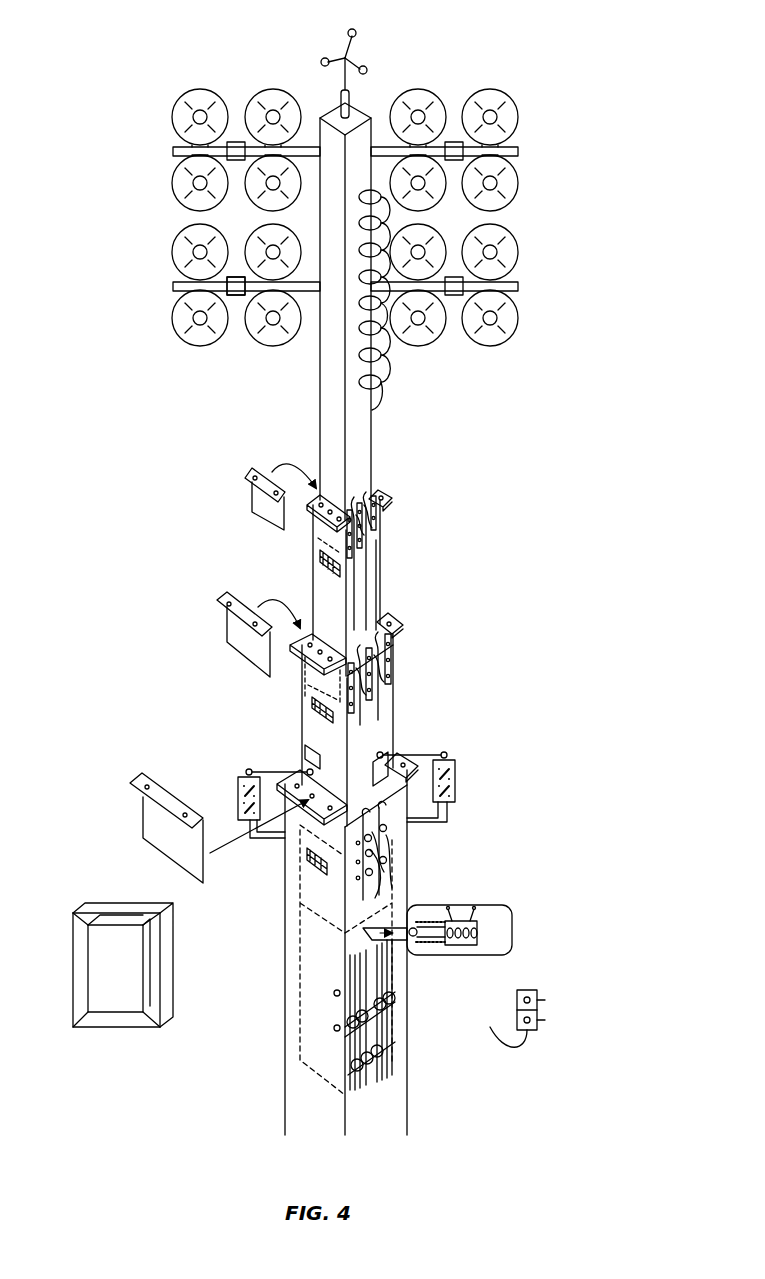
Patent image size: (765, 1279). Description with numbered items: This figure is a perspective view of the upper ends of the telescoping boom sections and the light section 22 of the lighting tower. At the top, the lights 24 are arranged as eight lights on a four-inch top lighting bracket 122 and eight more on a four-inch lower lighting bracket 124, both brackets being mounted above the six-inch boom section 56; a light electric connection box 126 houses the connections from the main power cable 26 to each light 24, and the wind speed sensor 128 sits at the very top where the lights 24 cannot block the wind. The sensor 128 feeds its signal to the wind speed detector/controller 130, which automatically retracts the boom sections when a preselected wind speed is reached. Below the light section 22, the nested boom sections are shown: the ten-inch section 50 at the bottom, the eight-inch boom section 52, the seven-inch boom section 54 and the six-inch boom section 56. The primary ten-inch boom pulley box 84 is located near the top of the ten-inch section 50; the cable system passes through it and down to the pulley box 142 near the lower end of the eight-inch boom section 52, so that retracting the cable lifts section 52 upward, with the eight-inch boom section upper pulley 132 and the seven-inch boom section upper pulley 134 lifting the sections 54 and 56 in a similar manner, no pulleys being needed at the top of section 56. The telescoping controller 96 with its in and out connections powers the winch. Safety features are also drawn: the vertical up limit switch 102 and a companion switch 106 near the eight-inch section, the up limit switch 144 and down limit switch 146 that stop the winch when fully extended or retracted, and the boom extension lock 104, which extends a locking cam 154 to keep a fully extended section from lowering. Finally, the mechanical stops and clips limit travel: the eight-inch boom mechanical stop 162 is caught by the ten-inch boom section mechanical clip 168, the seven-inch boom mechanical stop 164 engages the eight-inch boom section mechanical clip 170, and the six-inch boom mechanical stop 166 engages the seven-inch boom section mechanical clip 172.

The light section 22 is at (137, 124).
The lights 24 is at (499, 91).
The main power cable 26 is at (387, 368).
The lower pole section 50 is at (408, 890).
The 8" boom section 52 is at (394, 708).
The 7" boom section 54 is at (381, 577).
The 6" boom section 56 is at (372, 430).
The primary 10" boom pulley box 84 is at (388, 852).
The telescoping controller 96 is at (527, 990).
The vertical up limit switch 102 is at (238, 798).
The boom extension lock 104 is at (513, 928).
The right electrical box 106 is at (456, 781).
The 4" top lighting bracket 122 is at (523, 152).
The 4" lower lighting bracket 124 is at (518, 287).
The light electric connection box 126 is at (238, 296).
The wind speed sensor 128 is at (358, 33).
The wind speed detector/controller 130 is at (118, 903).
The 8" boom section upper pulley 132 is at (381, 668).
The 7" boom section upper pulley 134 is at (381, 522).
The 8" boom section pulley box 142 is at (388, 1040).
The up limit switch 144 is at (305, 752).
The down limit switch 146 is at (382, 757).
The locking cam 154 is at (400, 950).
The 8" boom mechanical stop 162 is at (307, 851).
The 7" boom mechanical stop 164 is at (313, 703).
The 6" boom mechanical stop 166 is at (320, 557).
The 10" boom section mechanical clip 168 is at (143, 816).
The 8" boom section mechanical clip 170 is at (218, 628).
The 7" boom section mechanical clip 172 is at (246, 494).